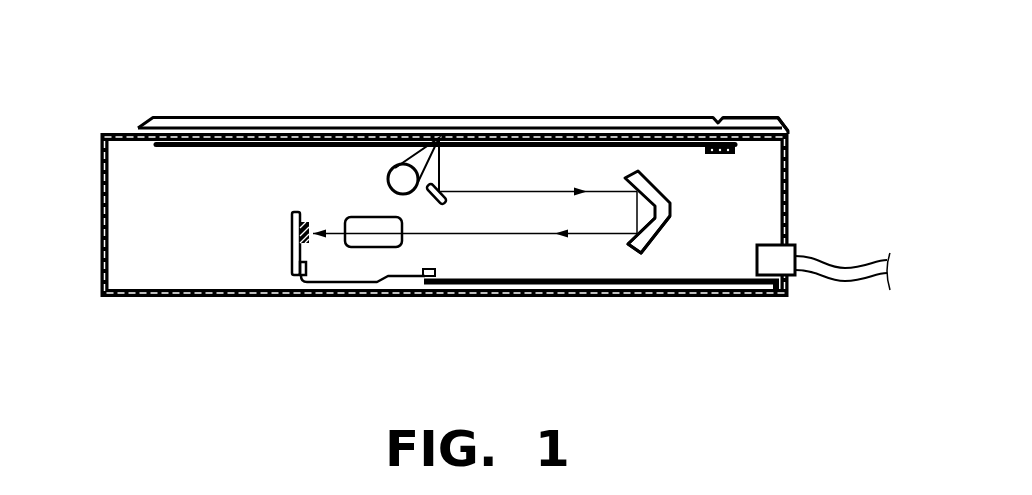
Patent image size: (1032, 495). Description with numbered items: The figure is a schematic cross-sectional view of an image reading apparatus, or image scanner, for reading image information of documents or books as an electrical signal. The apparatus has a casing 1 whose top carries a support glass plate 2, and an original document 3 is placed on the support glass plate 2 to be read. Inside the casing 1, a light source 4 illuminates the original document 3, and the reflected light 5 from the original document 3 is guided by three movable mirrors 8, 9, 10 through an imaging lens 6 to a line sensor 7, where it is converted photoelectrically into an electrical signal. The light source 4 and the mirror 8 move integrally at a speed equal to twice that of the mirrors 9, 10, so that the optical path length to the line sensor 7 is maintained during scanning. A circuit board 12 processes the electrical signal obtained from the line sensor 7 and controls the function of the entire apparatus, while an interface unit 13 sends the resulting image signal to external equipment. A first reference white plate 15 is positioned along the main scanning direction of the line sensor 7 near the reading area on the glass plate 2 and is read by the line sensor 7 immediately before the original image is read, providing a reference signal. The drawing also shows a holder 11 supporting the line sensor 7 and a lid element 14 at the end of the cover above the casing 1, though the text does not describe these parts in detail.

The casing 1 is at (101, 241).
The support glass plate 2 is at (690, 141).
The original document 3 is at (487, 117).
The light source 4 is at (397, 168).
The reflected light 5 is at (551, 191).
The imaging lens 6 is at (370, 238).
The line sensor 7 is at (296, 233).
The movable mirror 8 is at (445, 207).
The movable mirror 9 is at (633, 195).
The movable mirror 10 is at (650, 238).
The holder 11 is at (292, 276).
The circuit board 12 is at (735, 290).
The interface unit 13 is at (795, 248).
The lid stop 14 is at (782, 121).
The first reference white plate 15 is at (737, 147).